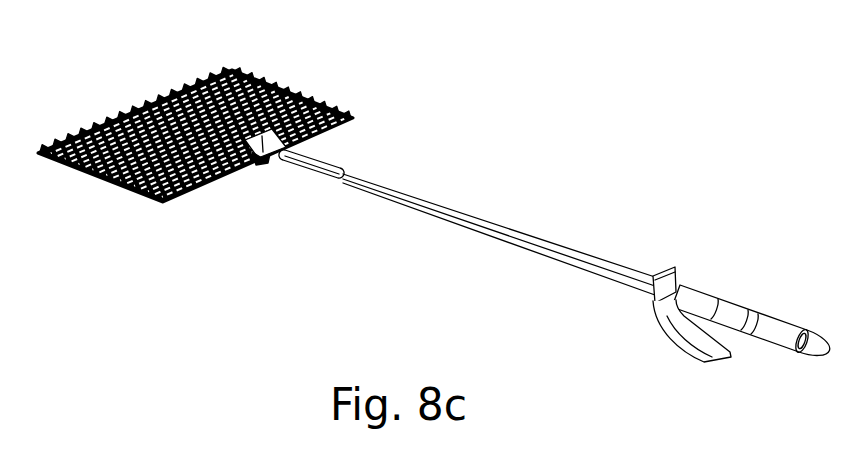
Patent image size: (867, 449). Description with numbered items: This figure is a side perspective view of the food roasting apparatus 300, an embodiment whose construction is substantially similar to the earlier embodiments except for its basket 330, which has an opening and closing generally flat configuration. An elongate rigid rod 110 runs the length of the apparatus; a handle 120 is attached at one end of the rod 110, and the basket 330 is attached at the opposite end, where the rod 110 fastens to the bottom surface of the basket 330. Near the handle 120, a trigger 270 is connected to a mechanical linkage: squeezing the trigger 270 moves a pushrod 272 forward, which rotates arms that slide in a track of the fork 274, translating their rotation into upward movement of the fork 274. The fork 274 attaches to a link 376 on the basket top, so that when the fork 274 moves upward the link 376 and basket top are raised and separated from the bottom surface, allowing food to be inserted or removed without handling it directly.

The food roasting apparatus 300 is at (661, 107).
The basket 330 is at (99, 222).
The link 376 is at (269, 155).
The fork 274 is at (341, 172).
The pushrod 272 is at (530, 230).
The elongate rigid rod 110 is at (483, 237).
The handle 120 is at (783, 317).
The trigger 270 is at (688, 347).